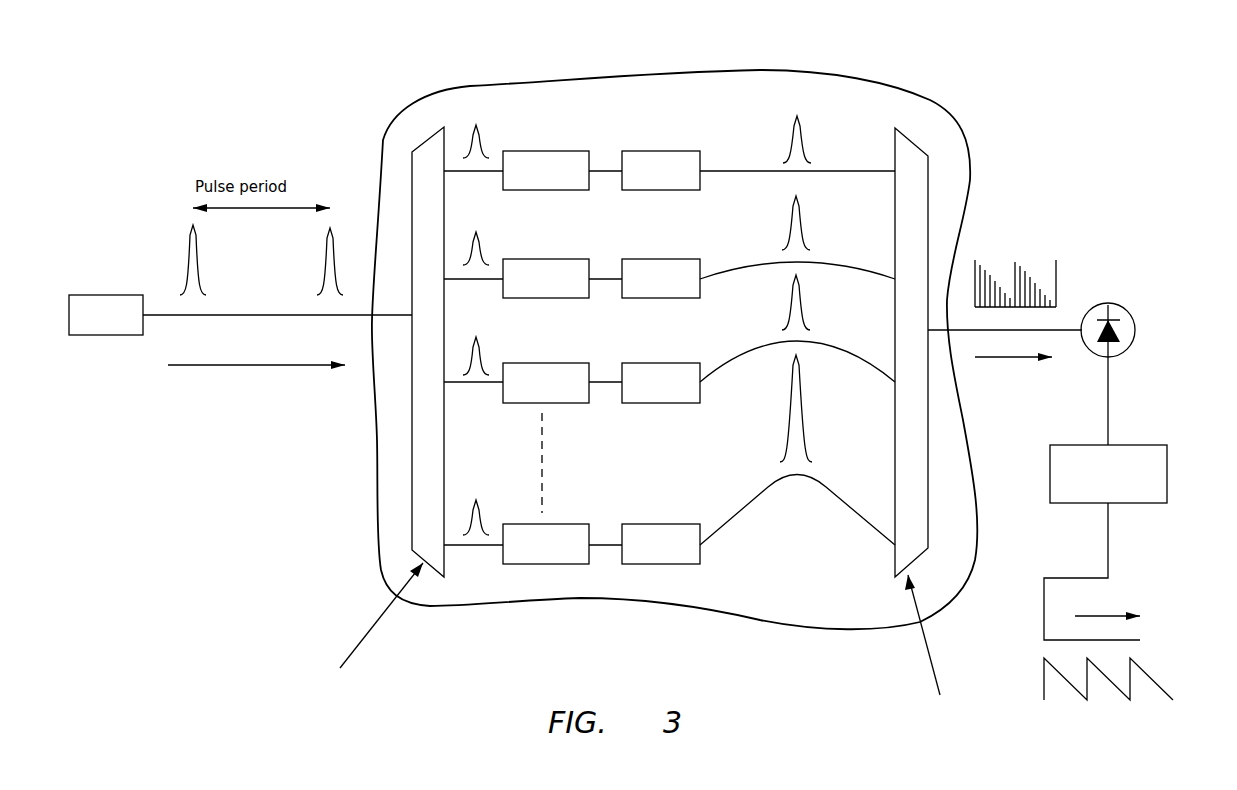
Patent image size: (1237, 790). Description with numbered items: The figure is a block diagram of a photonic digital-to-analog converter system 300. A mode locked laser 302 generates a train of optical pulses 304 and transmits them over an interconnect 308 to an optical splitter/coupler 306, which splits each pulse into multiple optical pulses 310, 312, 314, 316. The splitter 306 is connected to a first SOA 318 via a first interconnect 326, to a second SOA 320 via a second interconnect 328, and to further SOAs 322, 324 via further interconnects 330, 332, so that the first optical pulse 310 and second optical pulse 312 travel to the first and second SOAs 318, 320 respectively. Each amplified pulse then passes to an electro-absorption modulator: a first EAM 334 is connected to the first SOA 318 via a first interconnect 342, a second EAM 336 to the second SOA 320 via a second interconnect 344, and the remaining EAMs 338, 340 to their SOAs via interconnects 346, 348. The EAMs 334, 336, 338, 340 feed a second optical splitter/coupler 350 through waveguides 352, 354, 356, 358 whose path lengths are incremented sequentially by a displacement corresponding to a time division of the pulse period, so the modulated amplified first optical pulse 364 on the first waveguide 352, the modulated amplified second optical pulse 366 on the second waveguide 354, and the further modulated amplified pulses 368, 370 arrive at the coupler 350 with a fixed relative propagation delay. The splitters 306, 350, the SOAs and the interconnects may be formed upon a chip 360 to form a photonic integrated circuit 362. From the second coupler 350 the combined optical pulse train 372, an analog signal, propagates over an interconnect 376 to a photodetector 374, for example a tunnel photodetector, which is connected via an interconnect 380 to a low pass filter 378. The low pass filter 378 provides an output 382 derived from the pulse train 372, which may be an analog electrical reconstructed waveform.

The photonic digital-to-analog converter system 300 is at (212, 128).
The mode locked laser 302 is at (112, 295).
The optical pulses 304 is at (202, 242).
The optical splitter/coupler 306 is at (427, 140).
The interconnect 308 is at (156, 320).
The first optical pulse 310 is at (482, 130).
The second optical pulse 312 is at (485, 236).
The optical pulse 314 is at (487, 345).
The optical pulse 316 is at (483, 505).
The first semiconductor optical amplifier 318 is at (532, 150).
The second semiconductor optical amplifier 320 is at (548, 258).
The semiconductor optical amplifier 322 is at (568, 362).
The semiconductor optical amplifier 324 is at (555, 523).
The first interconnect 326 is at (458, 172).
The second interconnect 328 is at (465, 282).
The interconnect 330 is at (460, 385).
The interconnect 332 is at (457, 547).
The first electro-absorption modulator 334 is at (652, 150).
The second electro-absorption modulator 336 is at (665, 258).
The electro-absorption modulator 338 is at (640, 362).
The electro-absorption modulator 340 is at (635, 522).
The first interconnect 342 is at (598, 168).
The second interconnect 344 is at (606, 278).
The interconnect 346 is at (600, 382).
The interconnect 348 is at (598, 545).
The second optical splitter/coupler 350 is at (907, 135).
The first waveguide 352 is at (838, 168).
The second waveguide 354 is at (838, 272).
The waveguide 356 is at (832, 330).
The waveguide 358 is at (823, 477).
The chip 360 is at (778, 85).
The photonic integrated circuit 362 is at (850, 80).
The modulated amplified first optical pulse 364 is at (785, 145).
The modulated amplified second optical pulse 366 is at (785, 232).
The modulated amplified optical pulse 368 is at (785, 322).
The modulated amplified optical pulse 370 is at (785, 383).
The optical pulse train 372 is at (1010, 240).
The photodetector 374 is at (1125, 310).
The interconnect 376 is at (962, 335).
The low pass filter 378 is at (1120, 445).
The interconnect 380 is at (1112, 388).
The output 382 is at (1095, 612).